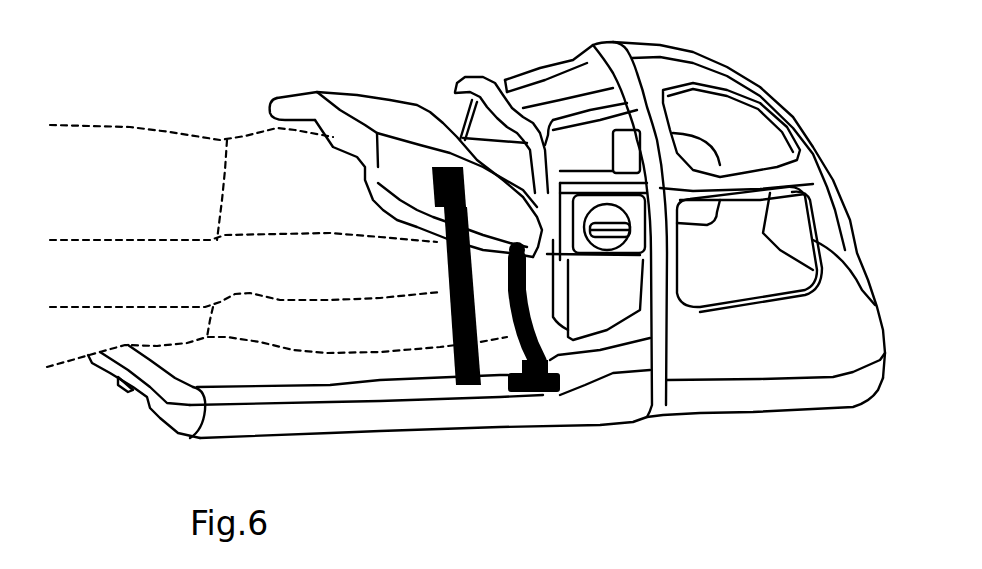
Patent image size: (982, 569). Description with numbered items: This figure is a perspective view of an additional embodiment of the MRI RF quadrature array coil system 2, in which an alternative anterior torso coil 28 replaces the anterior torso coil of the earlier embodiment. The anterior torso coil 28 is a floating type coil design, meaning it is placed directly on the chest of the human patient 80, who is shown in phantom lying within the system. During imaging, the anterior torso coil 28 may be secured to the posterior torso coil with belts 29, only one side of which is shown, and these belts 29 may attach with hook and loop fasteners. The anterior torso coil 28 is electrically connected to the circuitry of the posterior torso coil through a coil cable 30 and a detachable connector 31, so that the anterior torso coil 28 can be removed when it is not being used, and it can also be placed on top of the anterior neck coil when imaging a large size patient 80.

The MRI RF quadrature array coil system 2 is at (697, 452).
The anterior torso coil 28 is at (382, 118).
The belts 29 is at (452, 320).
The coil cable 30 is at (515, 303).
The detachable connector 31 is at (542, 390).
The human patient 80 is at (137, 137).